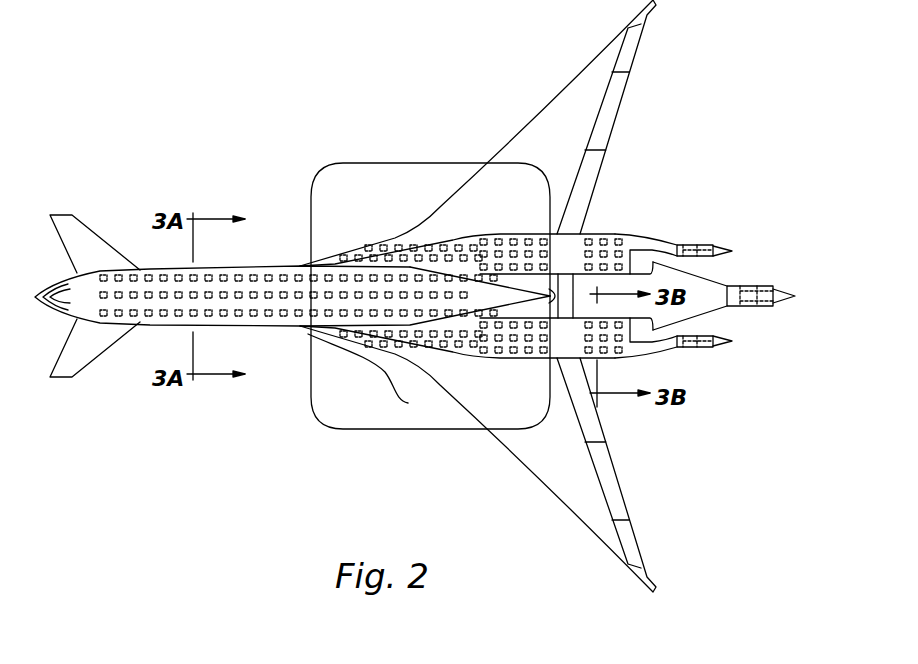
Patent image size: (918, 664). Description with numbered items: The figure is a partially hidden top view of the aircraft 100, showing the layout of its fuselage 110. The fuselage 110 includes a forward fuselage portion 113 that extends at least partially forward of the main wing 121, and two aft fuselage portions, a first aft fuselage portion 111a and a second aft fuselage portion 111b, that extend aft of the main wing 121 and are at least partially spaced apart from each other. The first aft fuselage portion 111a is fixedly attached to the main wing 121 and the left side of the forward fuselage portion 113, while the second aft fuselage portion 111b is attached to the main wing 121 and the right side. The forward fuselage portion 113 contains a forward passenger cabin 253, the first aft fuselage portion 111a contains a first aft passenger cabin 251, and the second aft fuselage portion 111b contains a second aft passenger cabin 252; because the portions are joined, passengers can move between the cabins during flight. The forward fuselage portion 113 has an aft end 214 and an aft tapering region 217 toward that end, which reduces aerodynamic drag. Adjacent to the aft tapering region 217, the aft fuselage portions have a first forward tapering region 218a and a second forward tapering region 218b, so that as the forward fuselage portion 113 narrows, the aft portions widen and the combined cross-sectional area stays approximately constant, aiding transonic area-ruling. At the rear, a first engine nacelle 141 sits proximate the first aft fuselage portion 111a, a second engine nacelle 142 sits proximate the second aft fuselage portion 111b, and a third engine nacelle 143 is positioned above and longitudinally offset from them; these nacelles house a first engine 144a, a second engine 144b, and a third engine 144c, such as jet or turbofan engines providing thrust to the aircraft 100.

The aircraft 100 is at (235, 443).
The fuselage 110 is at (121, 307).
The forward fuselage portion 113 is at (150, 268).
The main wing 121 is at (652, 16).
The first engine nacelle 141 is at (682, 352).
The second engine nacelle 142 is at (680, 241).
The third engine nacelle 143 is at (737, 286).
The first engine 144a is at (713, 348).
The second engine 144b is at (705, 242).
The third engine 144c is at (760, 307).
The first aft fuselage portion 111a is at (657, 357).
The second aft fuselage portion 111b is at (658, 233).
The aft end 214 is at (503, 276).
The aft tapering region 217 is at (373, 375).
The first forward tapering region 218a is at (416, 429).
The second forward tapering region 218b is at (415, 163).
The first aft passenger cabin 251 is at (508, 358).
The second aft passenger cabin 252 is at (467, 233).
The forward passenger cabin 253 is at (272, 282).